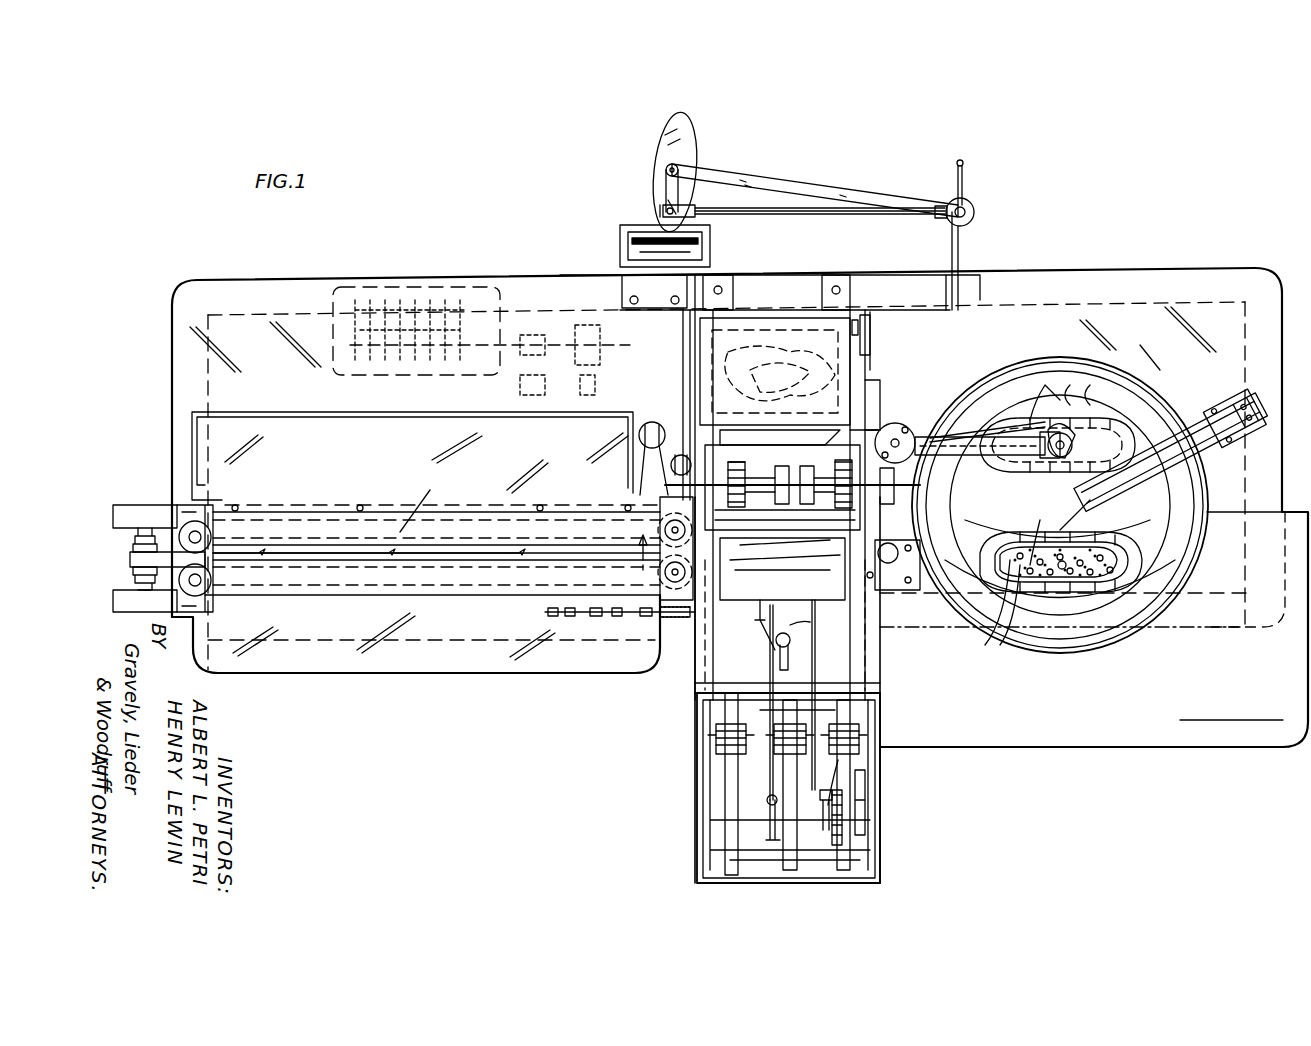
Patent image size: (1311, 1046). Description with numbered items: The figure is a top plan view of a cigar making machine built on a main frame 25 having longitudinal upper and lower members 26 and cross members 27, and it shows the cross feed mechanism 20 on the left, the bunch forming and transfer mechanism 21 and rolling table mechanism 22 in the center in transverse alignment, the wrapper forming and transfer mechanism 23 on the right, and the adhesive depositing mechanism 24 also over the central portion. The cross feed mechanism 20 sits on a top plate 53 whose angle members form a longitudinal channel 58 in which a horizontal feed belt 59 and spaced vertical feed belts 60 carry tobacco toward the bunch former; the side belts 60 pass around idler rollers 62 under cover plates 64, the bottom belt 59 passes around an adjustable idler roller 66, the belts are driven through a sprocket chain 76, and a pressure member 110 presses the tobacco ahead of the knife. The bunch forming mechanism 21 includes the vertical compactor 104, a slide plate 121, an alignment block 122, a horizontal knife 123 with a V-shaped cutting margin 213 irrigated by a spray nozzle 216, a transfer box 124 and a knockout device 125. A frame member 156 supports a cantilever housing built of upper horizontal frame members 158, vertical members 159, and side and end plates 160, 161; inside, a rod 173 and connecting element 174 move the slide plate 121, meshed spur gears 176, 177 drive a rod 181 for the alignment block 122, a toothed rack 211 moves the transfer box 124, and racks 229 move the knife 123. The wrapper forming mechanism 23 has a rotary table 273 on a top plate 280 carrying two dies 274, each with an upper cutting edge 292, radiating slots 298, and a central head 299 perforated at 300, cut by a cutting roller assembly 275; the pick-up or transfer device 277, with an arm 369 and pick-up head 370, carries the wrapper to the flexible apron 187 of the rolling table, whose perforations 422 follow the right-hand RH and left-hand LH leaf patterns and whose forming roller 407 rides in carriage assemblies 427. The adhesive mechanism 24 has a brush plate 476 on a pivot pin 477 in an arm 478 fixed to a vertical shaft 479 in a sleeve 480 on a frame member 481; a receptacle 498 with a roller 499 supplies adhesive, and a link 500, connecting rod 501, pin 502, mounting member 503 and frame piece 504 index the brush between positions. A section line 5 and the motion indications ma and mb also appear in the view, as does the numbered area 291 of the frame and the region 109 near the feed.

The section line 5 is at (950, 545).
The cross feed mechanism 20 is at (491, 686).
The bunch forming and transfer mechanism 21 is at (688, 683).
The rolling table mechanism 22 is at (892, 382).
The wrapper forming and transfer mechanism 23 is at (1170, 377).
The adhesive depositing mechanism 24 is at (632, 205).
The main frame 25 is at (279, 278).
The longitudinal upper and lower members 26 is at (362, 290).
The cross members 27 is at (185, 323).
The top plate 53 is at (340, 672).
The longitudinal channel 58 is at (334, 569).
The horizontal feed belt 59 is at (425, 555).
The vertical feed belts 60 is at (225, 552).
The idler pulleys or rollers 62 is at (178, 525).
The cover plates 64 is at (395, 535).
The idler roller 66 is at (135, 552).
The sprocket chain 76 is at (635, 620).
The vertical compactor 104 is at (780, 557).
The table 109 is at (528, 456).
The pressure member 110 is at (633, 531).
The slide plate 121 is at (755, 574).
The alignment block 122 is at (870, 590).
The horizontal knife 123 is at (845, 665).
The transfer box 124 is at (825, 707).
The knockout device 125 is at (740, 435).
The frame member 156 is at (722, 290).
The upper horizontal frame members 158 is at (702, 824).
The vertical members 159 is at (715, 762).
The side plates 160 is at (865, 816).
The end plates 161 is at (838, 888).
The rod 173 is at (760, 795).
The connecting element 174 is at (752, 605).
The spur gear 176 is at (833, 865).
The spur gear 177 is at (845, 797).
The rod 181 is at (845, 768).
The flexible apron 187 is at (878, 384).
The toothed rack 211 is at (785, 868).
The V-shaped cutting margin 213 is at (810, 622).
The spray nozzle 216 is at (800, 655).
The racks 229 is at (852, 850).
The rotary table 273 is at (1103, 614).
The dies 274 is at (1015, 550).
The cutting roller assembly 275 is at (1208, 499).
The pick-up or transfer device 277 is at (966, 422).
The top plate 280 is at (1160, 340).
The housing portion 291 is at (1215, 718).
The upper cutting edge 292 is at (1112, 540).
The slots 298 is at (1100, 570).
The central head 299 is at (1040, 520).
The perforations 300 is at (1000, 655).
The arm or tube 369 is at (960, 395).
The pick-up head 370 is at (1083, 441).
The forming roller 407 is at (868, 318).
The perforations 422 is at (767, 359).
The carriage assembly 427 is at (888, 297).
The rigid plate 476 is at (690, 150).
The vertical pivot pin 477 is at (660, 168).
The arm 478 is at (820, 180).
The vertical shaft 479 is at (970, 205).
The vertical sleeve 480 is at (975, 212).
The frame member 481 is at (958, 250).
The adhesive receptacle 498 is at (620, 252).
The roller 499 is at (640, 238).
The link 500 is at (662, 210).
The connecting rod 501 is at (765, 215).
The pin 502 is at (972, 210).
The mounting member 503 is at (965, 195).
The frame piece 504 is at (957, 163).
The motion line a ma is at (712, 312).
The motion line b mb is at (906, 412).
The left-hand position LH is at (710, 392).
The right-hand position RH is at (770, 395).